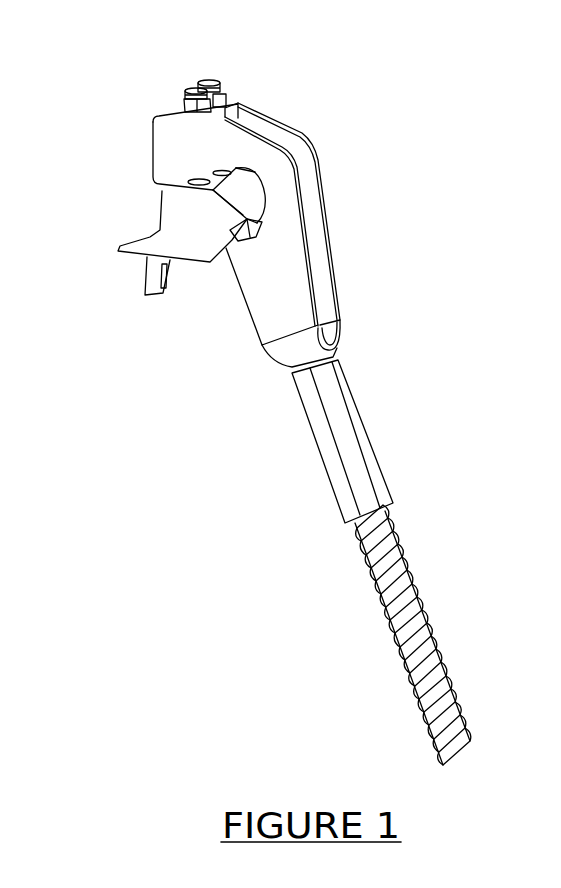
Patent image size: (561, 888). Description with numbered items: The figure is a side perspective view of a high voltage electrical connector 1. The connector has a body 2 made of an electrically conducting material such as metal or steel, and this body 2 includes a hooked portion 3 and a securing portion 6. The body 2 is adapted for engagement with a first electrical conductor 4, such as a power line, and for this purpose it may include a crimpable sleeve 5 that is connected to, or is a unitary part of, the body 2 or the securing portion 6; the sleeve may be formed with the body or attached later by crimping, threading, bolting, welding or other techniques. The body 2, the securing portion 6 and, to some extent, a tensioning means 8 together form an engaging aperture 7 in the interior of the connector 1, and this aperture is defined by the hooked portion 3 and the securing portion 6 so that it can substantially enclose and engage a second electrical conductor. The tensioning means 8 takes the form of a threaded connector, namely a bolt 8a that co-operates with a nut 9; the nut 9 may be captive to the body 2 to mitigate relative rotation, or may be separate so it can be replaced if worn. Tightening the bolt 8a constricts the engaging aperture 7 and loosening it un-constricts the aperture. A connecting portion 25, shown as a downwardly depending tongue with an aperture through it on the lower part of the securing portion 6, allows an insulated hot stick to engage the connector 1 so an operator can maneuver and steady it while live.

The high voltage electrical connector 1 is at (350, 231).
The body 2 is at (303, 132).
The hooked portion 3 is at (269, 191).
The first electrical conductor 4 is at (416, 573).
The crimpable sleeve 5 is at (378, 462).
The securing portion 6 is at (176, 222).
The engaging aperture 7 is at (250, 188).
The tensioning means 8 is at (225, 90).
The bolt 8a is at (202, 264).
The nut 9 is at (186, 107).
The connecting portion 25 is at (147, 282).